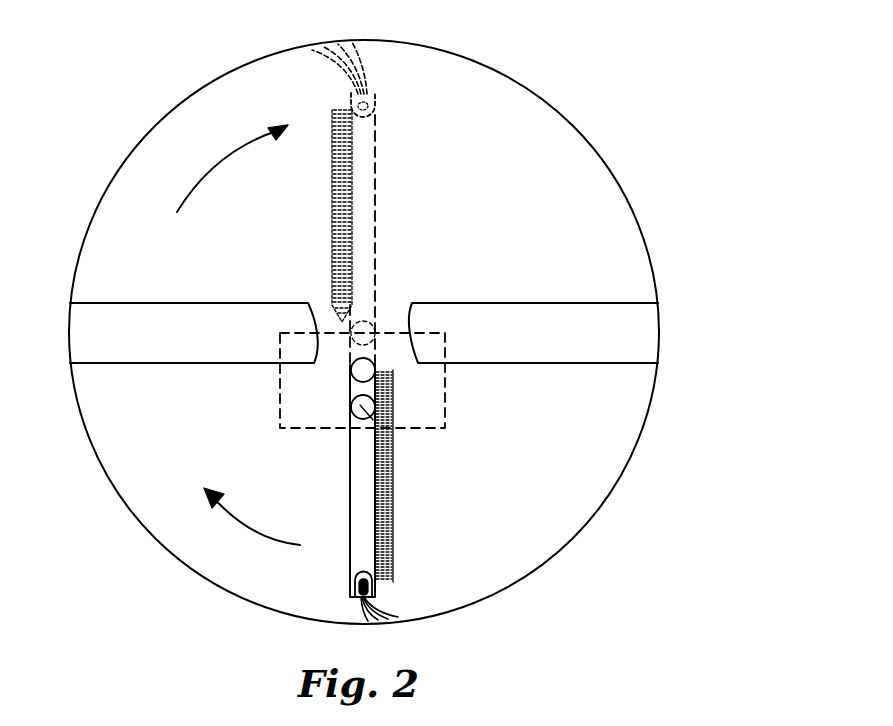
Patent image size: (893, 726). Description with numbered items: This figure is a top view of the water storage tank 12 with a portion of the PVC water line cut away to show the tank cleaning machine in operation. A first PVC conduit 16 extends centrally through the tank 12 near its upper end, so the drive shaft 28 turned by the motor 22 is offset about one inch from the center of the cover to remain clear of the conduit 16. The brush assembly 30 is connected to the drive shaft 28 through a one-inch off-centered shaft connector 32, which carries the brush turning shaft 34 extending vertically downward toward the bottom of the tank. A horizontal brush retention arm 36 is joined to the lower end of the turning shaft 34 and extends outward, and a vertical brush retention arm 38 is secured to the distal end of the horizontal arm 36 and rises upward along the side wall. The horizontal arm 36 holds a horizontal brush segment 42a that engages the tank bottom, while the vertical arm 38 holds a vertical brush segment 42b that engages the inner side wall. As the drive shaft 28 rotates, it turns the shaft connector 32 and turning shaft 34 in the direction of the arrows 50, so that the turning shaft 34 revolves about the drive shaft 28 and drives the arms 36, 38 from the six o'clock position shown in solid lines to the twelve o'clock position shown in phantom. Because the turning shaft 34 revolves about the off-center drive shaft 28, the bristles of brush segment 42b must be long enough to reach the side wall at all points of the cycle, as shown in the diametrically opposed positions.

The tank 12 is at (621, 190).
The first PVC conduit 16 is at (468, 303).
The motor 22 is at (446, 410).
The drive shaft 28 is at (385, 370).
The brush assembly 30 is at (350, 455).
The shaft connector 32 is at (352, 393).
The brush turning shaft 34 is at (393, 445).
The horizontal brush retention arm 36 is at (378, 190).
The vertical brush retention arm 38 is at (378, 105).
The horizontal brush segment 42a is at (332, 250).
The vertical brush segment 42b is at (367, 68).
The arrows 50 is at (218, 163).